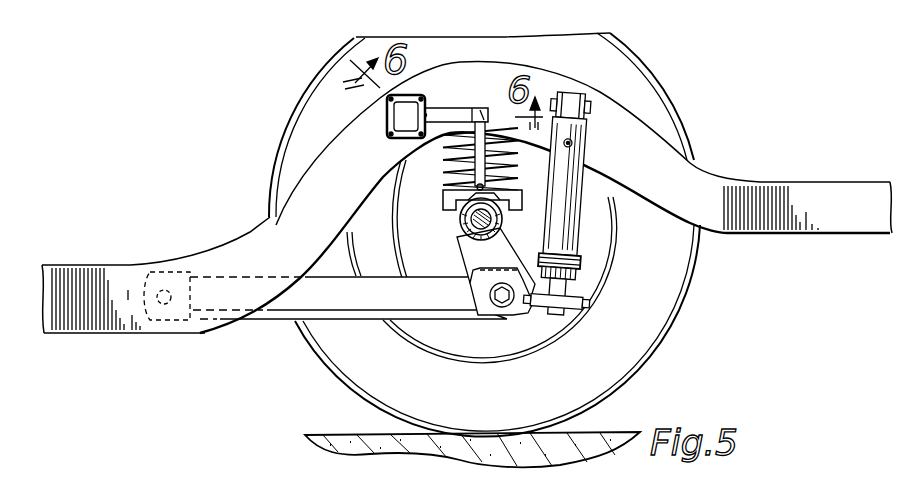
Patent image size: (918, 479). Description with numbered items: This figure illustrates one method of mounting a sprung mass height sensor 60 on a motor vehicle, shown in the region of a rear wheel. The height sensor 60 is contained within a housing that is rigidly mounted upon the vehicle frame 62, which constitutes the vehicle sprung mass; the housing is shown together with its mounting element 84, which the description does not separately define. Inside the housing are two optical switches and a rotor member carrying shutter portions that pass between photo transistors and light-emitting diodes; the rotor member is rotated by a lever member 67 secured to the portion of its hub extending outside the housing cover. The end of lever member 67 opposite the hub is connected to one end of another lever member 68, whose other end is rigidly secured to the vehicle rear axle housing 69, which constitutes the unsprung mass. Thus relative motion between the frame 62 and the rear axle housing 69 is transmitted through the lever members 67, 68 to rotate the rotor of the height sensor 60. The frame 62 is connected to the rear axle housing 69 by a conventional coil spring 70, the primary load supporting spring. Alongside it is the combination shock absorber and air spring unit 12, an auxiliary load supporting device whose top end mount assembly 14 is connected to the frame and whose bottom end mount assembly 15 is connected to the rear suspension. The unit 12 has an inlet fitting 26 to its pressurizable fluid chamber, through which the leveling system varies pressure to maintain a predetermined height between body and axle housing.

The combination shock absorber and air spring unit 12 is at (588, 204).
The top end mount assembly 14 is at (573, 93).
The bottom end mount assembly 15 is at (566, 315).
The inlet fitting 26 is at (578, 144).
The height sensor 60 is at (432, 102).
The vehicle frame 62 is at (255, 243).
The lever member 67 is at (458, 157).
The lever member 68 is at (458, 188).
The rear axle housing 69 is at (468, 240).
The coil spring 70 is at (461, 209).
The mounting box 84 is at (389, 130).